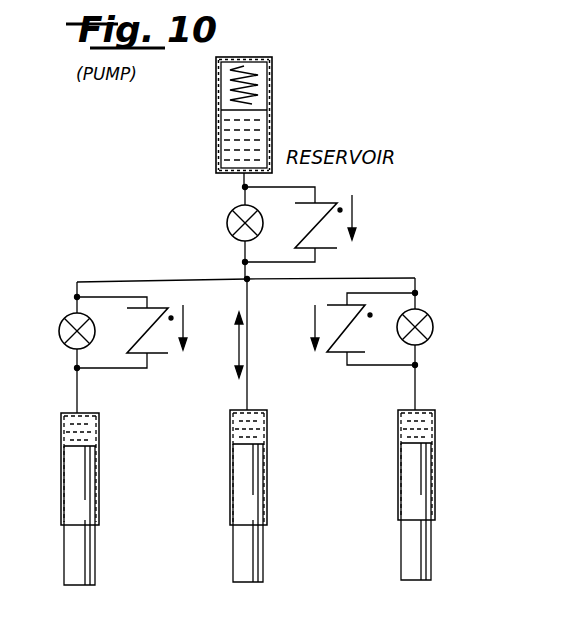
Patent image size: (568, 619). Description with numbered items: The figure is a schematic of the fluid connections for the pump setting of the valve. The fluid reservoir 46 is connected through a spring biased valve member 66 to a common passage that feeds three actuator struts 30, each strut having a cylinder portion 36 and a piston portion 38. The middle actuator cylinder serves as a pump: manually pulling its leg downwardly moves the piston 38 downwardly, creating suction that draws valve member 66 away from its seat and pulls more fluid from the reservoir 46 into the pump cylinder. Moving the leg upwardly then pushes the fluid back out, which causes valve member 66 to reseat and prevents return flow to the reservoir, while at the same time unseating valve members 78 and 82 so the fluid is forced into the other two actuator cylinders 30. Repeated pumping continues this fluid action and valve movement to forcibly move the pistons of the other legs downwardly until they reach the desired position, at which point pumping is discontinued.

The strut 30 is at (217, 497).
The cylinder portion 36 is at (230, 489).
The piston portion 38 is at (240, 562).
The fluid reservoir 46 is at (272, 94).
The spring biased valve member 66 is at (228, 218).
The spring biased valve member 78 is at (62, 325).
The spring biased valve member 82 is at (426, 312).